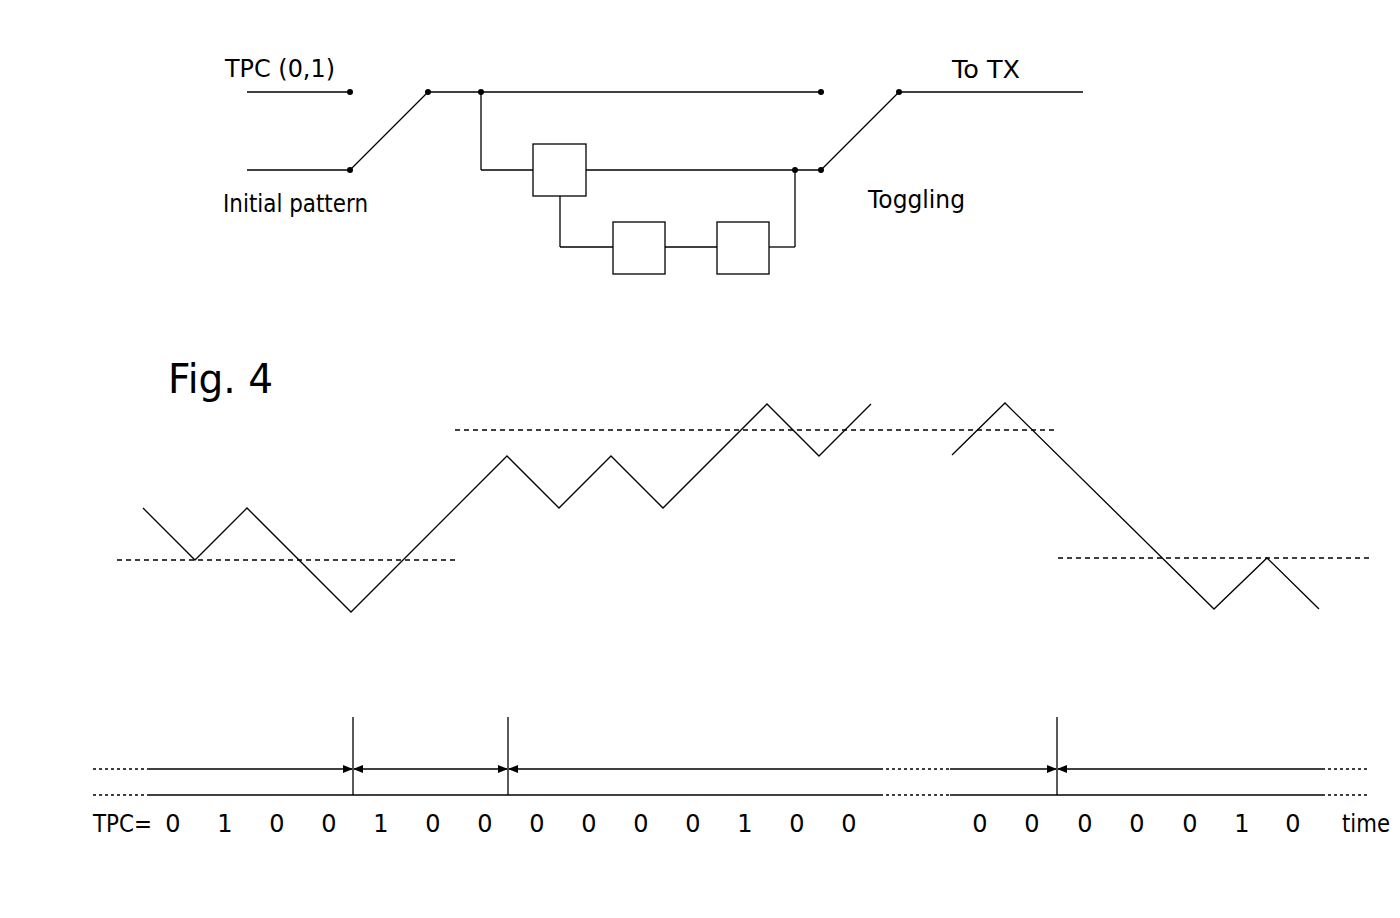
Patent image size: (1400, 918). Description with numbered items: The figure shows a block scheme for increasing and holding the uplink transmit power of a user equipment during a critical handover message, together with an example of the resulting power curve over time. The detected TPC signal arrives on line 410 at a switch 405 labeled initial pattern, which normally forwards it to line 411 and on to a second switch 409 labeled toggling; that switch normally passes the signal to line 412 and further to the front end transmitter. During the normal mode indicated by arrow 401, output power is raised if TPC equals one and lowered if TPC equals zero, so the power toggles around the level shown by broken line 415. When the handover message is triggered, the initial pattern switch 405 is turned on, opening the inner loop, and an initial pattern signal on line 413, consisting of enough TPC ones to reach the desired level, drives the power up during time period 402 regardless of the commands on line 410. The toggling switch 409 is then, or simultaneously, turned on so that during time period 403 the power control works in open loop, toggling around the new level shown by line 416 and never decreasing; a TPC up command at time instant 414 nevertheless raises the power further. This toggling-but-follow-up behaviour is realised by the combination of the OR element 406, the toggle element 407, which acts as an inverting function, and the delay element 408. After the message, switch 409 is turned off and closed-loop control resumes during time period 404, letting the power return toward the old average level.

The normal mode time period 401 is at (223, 756).
The initial pattern time period 402 is at (431, 756).
The open loop time period 403 is at (729, 744).
The closed loop resumption time period 404 is at (1160, 756).
The initial pattern switch 405 is at (393, 128).
The OR element 406 is at (558, 142).
The toggle element 407 is at (637, 276).
The delay element 408 is at (727, 276).
The toggling switch 409 is at (858, 132).
The TPC signal line 410 is at (273, 95).
The forwarded TPC line 411 is at (700, 90).
The transmitter output line 412 is at (975, 95).
The initial pattern signal line 413 is at (288, 168).
The TPC up time instant 414 is at (745, 792).
The old power level line 415 is at (237, 562).
The new power level line 416 is at (580, 430).